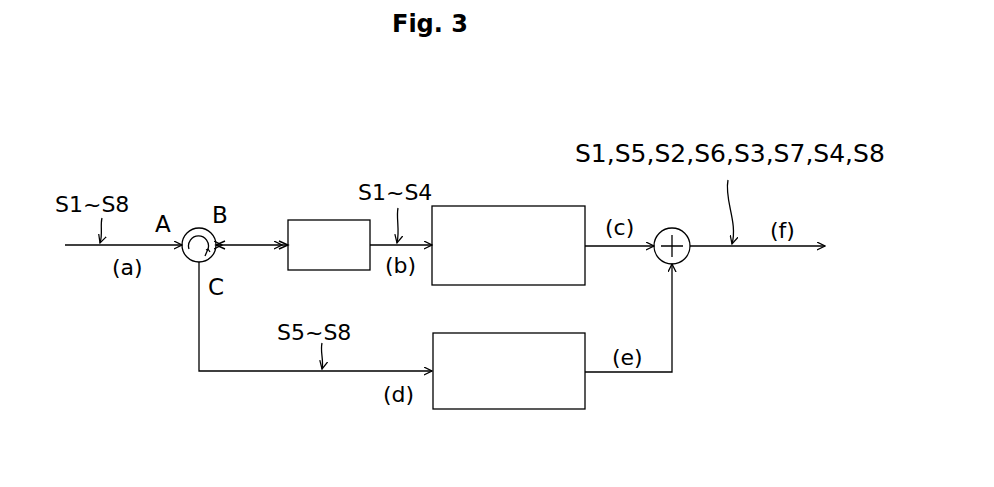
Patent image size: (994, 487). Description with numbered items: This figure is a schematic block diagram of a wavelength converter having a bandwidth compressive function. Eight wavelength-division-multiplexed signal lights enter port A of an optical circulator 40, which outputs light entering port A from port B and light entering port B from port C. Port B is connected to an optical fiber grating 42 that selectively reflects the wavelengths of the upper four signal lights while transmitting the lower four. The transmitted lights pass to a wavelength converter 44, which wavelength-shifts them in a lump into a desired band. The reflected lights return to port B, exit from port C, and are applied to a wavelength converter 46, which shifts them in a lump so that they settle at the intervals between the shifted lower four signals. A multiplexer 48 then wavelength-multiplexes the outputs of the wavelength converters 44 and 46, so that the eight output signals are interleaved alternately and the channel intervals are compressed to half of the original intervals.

The optical circulator 40 is at (200, 228).
The optical fiber grating 42 is at (323, 232).
The wavelength converter 44 is at (500, 210).
The wavelength converter 46 is at (508, 407).
The multiplexer 48 is at (688, 254).